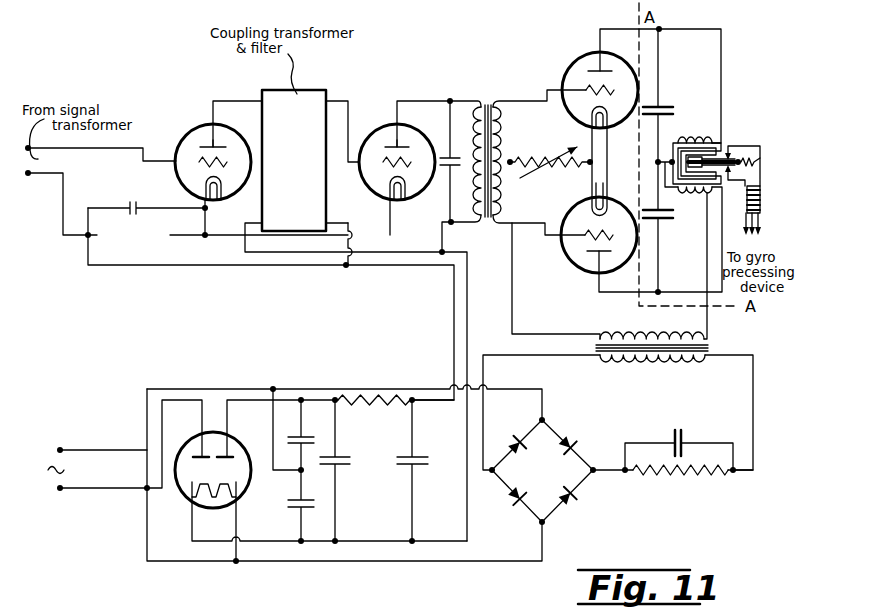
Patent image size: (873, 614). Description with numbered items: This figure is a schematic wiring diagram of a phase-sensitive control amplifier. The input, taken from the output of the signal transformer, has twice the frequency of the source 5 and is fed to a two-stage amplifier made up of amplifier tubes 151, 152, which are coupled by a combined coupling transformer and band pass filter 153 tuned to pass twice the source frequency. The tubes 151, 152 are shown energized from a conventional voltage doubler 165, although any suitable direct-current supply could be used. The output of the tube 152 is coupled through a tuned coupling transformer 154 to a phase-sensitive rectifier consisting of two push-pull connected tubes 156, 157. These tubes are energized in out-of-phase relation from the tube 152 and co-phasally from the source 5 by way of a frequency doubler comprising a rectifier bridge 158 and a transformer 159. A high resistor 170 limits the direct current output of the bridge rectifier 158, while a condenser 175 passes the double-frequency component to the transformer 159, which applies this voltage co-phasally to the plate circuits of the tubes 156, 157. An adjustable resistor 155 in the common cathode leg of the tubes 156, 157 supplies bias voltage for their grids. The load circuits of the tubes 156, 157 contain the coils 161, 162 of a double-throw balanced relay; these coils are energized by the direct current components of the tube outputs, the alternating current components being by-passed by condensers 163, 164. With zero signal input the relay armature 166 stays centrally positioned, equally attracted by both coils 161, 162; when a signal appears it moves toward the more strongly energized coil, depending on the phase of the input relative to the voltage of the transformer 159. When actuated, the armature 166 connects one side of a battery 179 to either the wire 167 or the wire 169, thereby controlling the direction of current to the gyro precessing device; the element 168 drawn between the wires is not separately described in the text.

The source 5 is at (58, 487).
The amplifier tube 151 is at (197, 124).
The amplifier tube 152 is at (388, 124).
The combined coupling transformer and band pass filter 153 is at (328, 97).
The tuned coupling transformer 154 is at (487, 107).
The adjustable resistor 155 is at (553, 162).
The push-pull connected tube 156 is at (574, 67).
The push-pull connected tube 157 is at (578, 268).
The rectifier bridge 158 is at (548, 507).
The transformer 159 is at (712, 351).
The coil 161 is at (693, 132).
The coil 162 is at (661, 220).
The condenser 163 is at (672, 108).
The condenser 164 is at (692, 196).
The voltage doubler 165 is at (252, 434).
The relay armature 166 is at (712, 145).
The wire 167 is at (760, 164).
The gear train 168 is at (760, 195).
The wire 169 is at (752, 211).
The high resistor 170 is at (672, 474).
The condenser 175 is at (683, 438).
The battery 179 is at (762, 151).